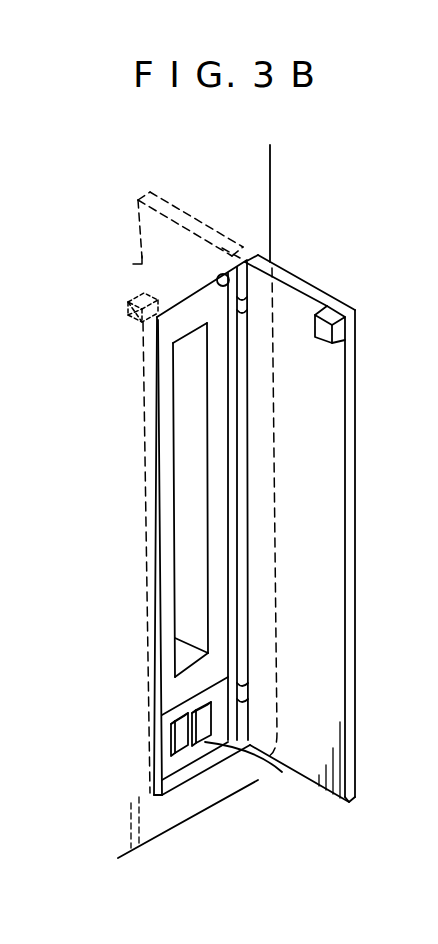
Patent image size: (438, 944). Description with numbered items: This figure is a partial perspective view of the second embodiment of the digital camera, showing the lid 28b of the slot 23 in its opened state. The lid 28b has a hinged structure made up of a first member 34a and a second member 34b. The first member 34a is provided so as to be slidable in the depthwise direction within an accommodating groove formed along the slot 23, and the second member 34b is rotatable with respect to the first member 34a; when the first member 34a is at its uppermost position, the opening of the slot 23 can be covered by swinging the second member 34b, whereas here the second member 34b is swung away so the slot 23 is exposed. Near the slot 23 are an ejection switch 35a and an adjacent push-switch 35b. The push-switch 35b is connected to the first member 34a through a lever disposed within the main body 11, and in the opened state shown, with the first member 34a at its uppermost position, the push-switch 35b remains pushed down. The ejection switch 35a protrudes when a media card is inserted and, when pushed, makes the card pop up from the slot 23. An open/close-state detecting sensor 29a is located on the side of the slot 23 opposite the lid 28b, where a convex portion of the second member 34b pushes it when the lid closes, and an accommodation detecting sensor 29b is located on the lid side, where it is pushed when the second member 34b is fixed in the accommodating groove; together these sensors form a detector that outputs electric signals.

The main body 11 is at (153, 820).
The slot 23 is at (187, 500).
The lid 28b is at (328, 408).
The open/close-state detecting sensor 29a is at (132, 325).
The accommodation detecting sensor 29b is at (212, 285).
The first member 34a is at (193, 219).
The second member 34b is at (305, 287).
The ejection switch 35a is at (182, 750).
The push-switch 35b is at (207, 733).